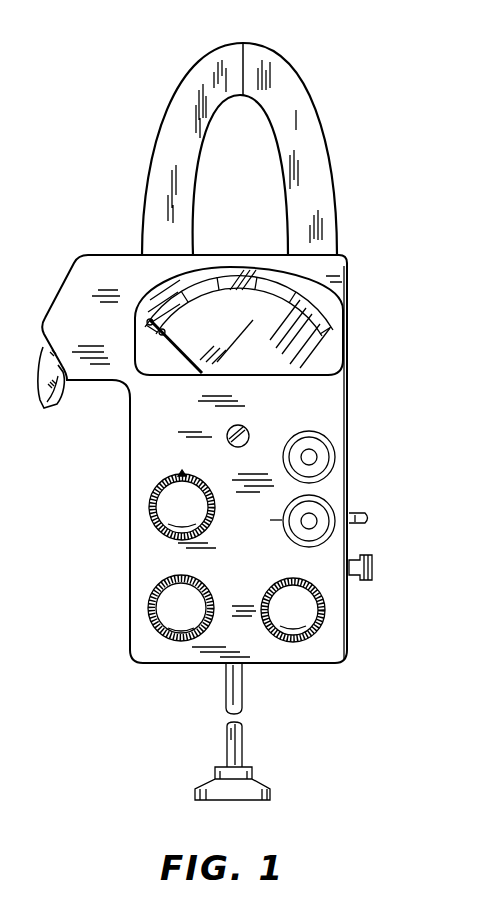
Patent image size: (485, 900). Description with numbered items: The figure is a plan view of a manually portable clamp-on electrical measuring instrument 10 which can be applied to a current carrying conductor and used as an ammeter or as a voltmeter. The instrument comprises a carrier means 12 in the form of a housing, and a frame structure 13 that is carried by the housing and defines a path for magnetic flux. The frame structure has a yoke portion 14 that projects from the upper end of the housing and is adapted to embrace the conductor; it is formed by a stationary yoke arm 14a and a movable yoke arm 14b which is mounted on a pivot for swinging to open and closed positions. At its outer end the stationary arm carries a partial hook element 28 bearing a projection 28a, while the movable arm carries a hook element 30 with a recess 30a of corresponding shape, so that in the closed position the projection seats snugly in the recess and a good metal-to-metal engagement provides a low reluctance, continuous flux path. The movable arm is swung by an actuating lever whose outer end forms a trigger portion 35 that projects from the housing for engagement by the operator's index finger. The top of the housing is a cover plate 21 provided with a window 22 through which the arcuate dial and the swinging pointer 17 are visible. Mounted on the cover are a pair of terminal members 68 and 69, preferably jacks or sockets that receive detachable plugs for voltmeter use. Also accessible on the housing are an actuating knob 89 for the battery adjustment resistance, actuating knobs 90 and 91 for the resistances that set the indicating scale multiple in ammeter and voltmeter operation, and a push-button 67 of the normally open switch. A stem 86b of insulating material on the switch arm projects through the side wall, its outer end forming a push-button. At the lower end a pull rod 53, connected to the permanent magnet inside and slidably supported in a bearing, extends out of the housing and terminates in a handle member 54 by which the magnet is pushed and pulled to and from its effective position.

The measuring instrument 10 is at (351, 460).
The carrier means 12 is at (126, 542).
The frame structure 13 is at (343, 232).
The yoke portion 14 is at (310, 133).
The stationary yoke arm 14a is at (322, 187).
The movable yoke arm 14b is at (160, 173).
The pointer 17 is at (196, 356).
The cover plate 21 is at (328, 398).
The window 22 is at (320, 358).
The hook element 28 is at (270, 86).
The projection 28a is at (244, 66).
The hook element 30 is at (186, 72).
The recess 30a is at (238, 92).
The trigger portion 35 is at (55, 410).
The pull rod 53 is at (228, 742).
The handle member 54 is at (268, 795).
The push-button 67 is at (373, 569).
The terminal member 68 is at (314, 452).
The terminal member 69 is at (314, 518).
The stem 86b is at (368, 519).
The actuating knob 89 is at (146, 612).
The actuating knob 90 is at (148, 500).
The actuating knob 91 is at (324, 636).